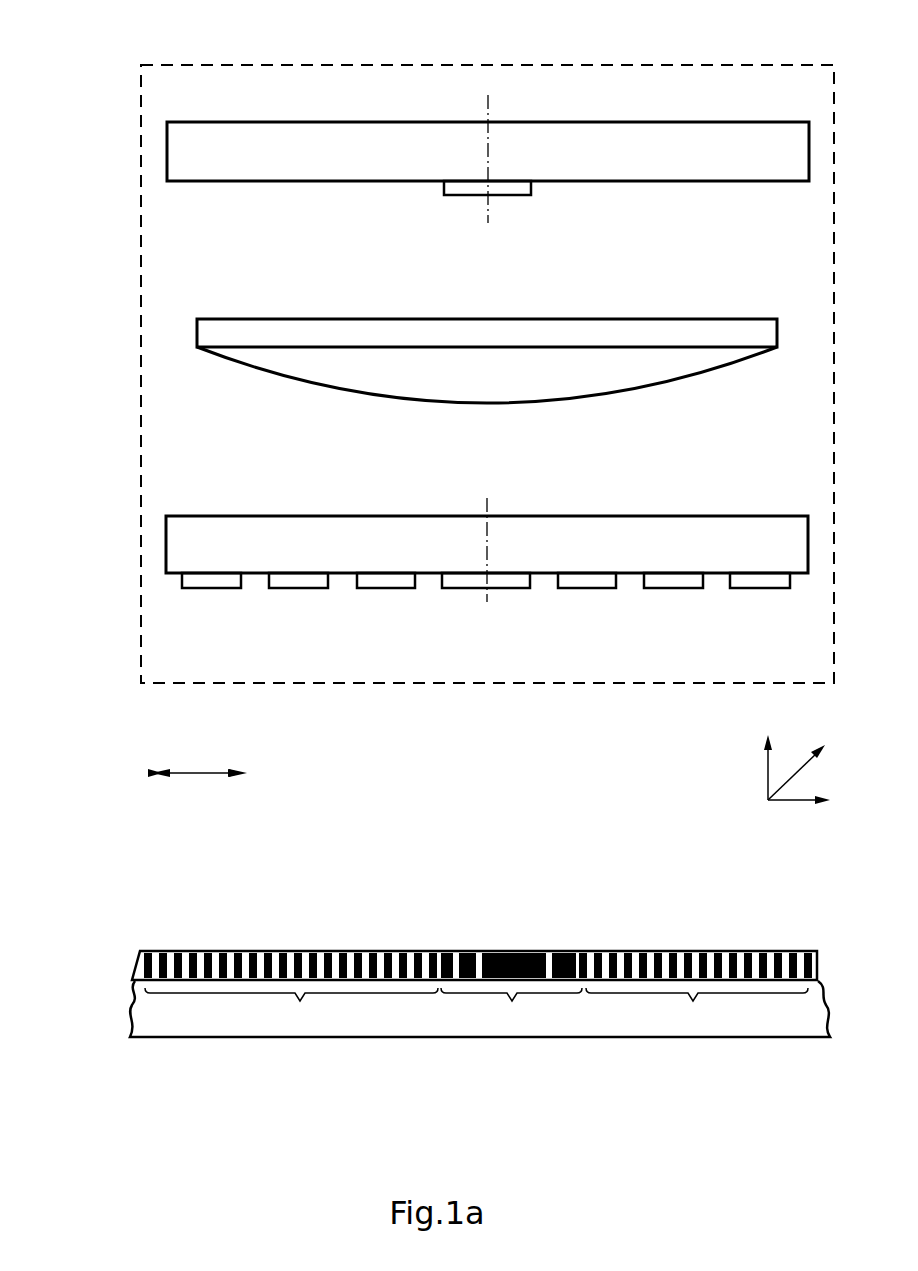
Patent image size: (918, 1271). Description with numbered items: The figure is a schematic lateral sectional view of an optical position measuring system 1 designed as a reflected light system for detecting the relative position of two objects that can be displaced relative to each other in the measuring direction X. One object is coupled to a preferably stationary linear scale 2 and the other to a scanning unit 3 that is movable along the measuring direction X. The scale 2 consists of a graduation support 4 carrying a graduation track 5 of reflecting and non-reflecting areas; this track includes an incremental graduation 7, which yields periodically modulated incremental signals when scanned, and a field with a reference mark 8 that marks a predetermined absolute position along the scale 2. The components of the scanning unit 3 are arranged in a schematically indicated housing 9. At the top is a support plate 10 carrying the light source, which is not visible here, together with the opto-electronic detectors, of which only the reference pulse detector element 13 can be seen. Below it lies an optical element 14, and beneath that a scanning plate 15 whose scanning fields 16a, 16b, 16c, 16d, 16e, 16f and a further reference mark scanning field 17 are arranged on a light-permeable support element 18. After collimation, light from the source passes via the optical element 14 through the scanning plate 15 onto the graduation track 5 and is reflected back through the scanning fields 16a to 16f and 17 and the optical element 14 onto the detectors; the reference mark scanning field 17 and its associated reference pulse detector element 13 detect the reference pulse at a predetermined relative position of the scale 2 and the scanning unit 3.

The optical position measuring system 1 is at (112, 751).
The scale 2 is at (122, 995).
The scanning unit 3 is at (118, 161).
The graduation support 4 is at (635, 1030).
The graduation track 5 is at (590, 950).
The incremental graduation 7 is at (476, 1009).
The reference mark 8 is at (511, 989).
The housing 9 is at (400, 64).
The support plate 10 is at (687, 130).
The reference pulse detector element 13 is at (520, 197).
The optical element 14 is at (703, 345).
The scanning plate 15 is at (118, 550).
The scanning field 16a is at (210, 591).
The scanning field 16b is at (293, 591).
The scanning field 16c is at (385, 591).
The scanning field 16d is at (580, 591).
The scanning field 16e is at (680, 591).
The scanning field 16f is at (764, 591).
The reference mark scanning field 17 is at (464, 591).
The light-permeable support element 18 is at (272, 522).